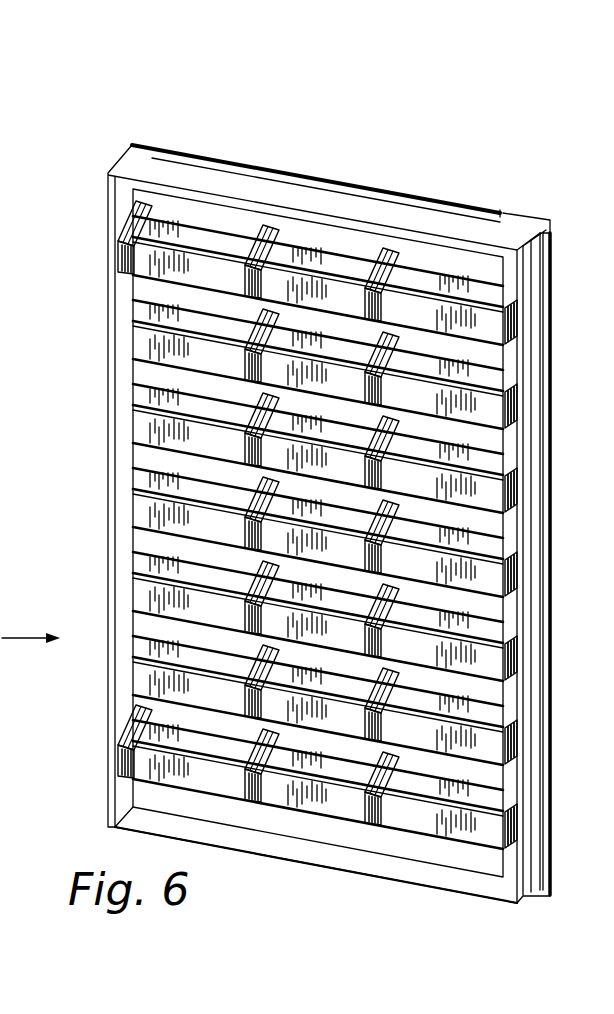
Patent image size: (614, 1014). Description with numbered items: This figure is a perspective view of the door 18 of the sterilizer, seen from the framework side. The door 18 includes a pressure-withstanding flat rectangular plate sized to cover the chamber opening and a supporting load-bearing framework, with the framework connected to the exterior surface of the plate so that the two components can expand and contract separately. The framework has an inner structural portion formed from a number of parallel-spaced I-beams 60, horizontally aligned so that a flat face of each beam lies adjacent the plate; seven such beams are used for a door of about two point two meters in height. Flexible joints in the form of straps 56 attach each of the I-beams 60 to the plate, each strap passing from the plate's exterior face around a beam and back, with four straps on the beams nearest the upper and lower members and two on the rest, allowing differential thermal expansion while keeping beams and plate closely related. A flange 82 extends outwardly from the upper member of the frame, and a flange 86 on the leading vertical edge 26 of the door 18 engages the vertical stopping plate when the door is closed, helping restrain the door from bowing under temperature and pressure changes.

The door 18 is at (232, 122).
The leading vertical edge 26 is at (565, 403).
The straps 56 is at (265, 402).
The I-beams 60 is at (128, 512).
The flange 82 is at (365, 188).
The flange 86 is at (548, 627).